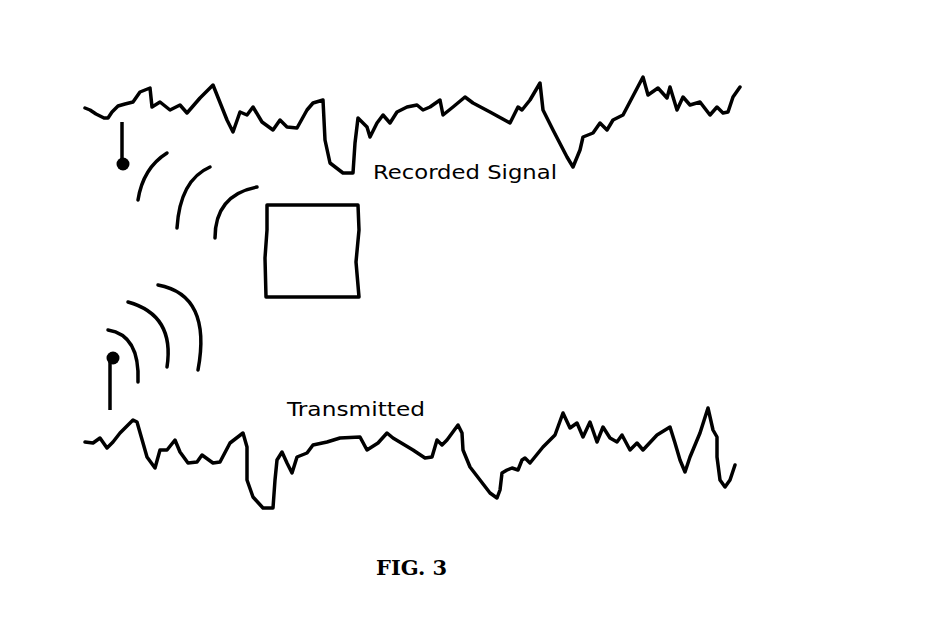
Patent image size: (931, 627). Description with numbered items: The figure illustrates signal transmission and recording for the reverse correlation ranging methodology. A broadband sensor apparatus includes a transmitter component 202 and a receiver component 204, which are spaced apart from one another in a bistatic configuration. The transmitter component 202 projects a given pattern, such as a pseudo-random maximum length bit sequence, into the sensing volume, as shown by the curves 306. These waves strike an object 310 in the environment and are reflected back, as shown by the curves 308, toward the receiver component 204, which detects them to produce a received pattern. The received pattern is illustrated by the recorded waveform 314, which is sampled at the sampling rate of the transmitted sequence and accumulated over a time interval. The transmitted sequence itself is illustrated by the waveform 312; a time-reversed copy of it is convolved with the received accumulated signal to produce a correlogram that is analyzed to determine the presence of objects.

The transmitter component 202 is at (112, 358).
The receiver component 204 is at (120, 172).
The transmitted wave curves 306 is at (207, 307).
The reflected wave curves 308 is at (173, 207).
The object 310 is at (312, 251).
The transmitted sequence waveform 312 is at (708, 408).
The received pattern waveform 314 is at (740, 87).